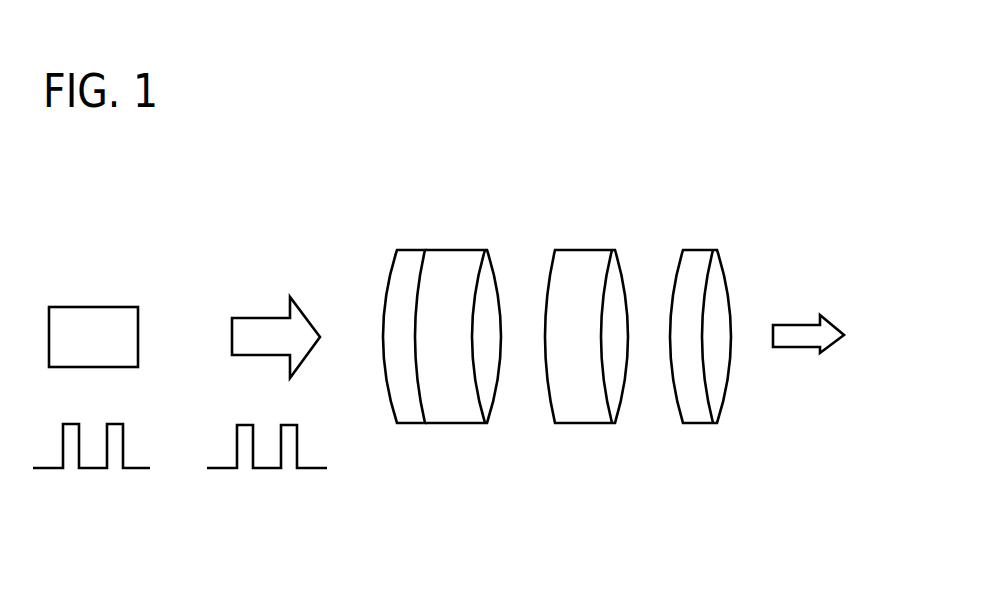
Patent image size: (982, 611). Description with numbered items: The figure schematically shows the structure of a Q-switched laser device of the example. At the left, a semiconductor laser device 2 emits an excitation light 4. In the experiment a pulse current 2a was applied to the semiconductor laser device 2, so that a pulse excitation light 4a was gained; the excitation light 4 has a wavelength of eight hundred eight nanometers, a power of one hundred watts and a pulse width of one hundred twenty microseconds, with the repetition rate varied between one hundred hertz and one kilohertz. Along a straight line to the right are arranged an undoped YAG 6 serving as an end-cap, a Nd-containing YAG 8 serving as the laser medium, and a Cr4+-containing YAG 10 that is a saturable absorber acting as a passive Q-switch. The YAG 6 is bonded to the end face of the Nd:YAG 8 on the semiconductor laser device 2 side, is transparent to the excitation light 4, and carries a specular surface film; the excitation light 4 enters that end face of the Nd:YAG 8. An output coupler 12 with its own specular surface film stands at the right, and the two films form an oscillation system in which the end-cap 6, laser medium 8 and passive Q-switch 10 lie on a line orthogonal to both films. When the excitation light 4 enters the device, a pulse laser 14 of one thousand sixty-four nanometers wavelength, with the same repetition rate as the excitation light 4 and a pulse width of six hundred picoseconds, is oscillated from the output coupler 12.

The semiconductor laser device 2 is at (92, 317).
The pulse current 2a is at (97, 490).
The excitation light 4 is at (258, 322).
The pulse excitation light 4a is at (270, 487).
The undoped YAG end-cap 6 is at (408, 256).
The Nd:YAG laser medium 8 is at (457, 256).
The Cr4+:YAG passive Q-switch 10 is at (587, 256).
The output coupler 12 is at (697, 256).
The pulse laser 14 is at (796, 333).